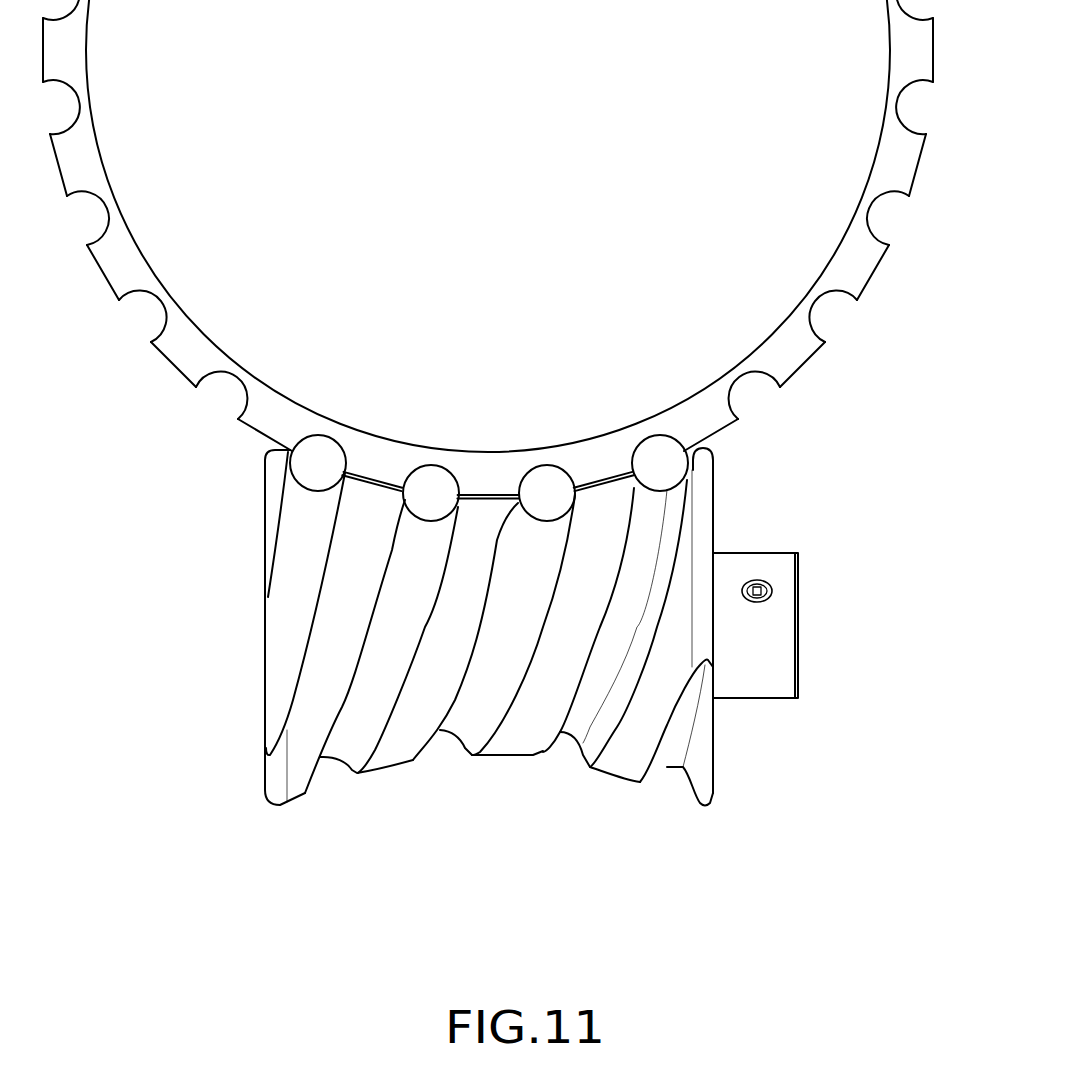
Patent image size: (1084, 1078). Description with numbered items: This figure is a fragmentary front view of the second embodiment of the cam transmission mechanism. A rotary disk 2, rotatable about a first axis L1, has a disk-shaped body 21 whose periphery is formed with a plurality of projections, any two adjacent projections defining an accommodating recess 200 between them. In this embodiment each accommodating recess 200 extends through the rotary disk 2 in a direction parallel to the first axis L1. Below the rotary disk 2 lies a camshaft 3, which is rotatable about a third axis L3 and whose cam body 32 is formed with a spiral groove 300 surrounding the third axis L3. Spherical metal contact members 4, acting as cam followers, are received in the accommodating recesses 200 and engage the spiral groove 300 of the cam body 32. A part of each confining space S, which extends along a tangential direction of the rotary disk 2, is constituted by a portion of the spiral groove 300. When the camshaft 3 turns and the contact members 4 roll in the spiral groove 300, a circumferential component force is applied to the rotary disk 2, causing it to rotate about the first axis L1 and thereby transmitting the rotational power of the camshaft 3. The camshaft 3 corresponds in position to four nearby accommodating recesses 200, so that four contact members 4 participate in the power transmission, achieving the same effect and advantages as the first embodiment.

The rotary disk 2 is at (165, 365).
The disk-shaped body 21 is at (788, 235).
The accommodating recess 200 is at (225, 398).
The contact member 4 is at (427, 480).
The camshaft 3 is at (540, 687).
The cam body 32 is at (405, 753).
The spiral groove 300 is at (570, 750).
The confining space S is at (730, 523).
The first axis L1 is at (486, 53).
The third axis L3 is at (230, 627).